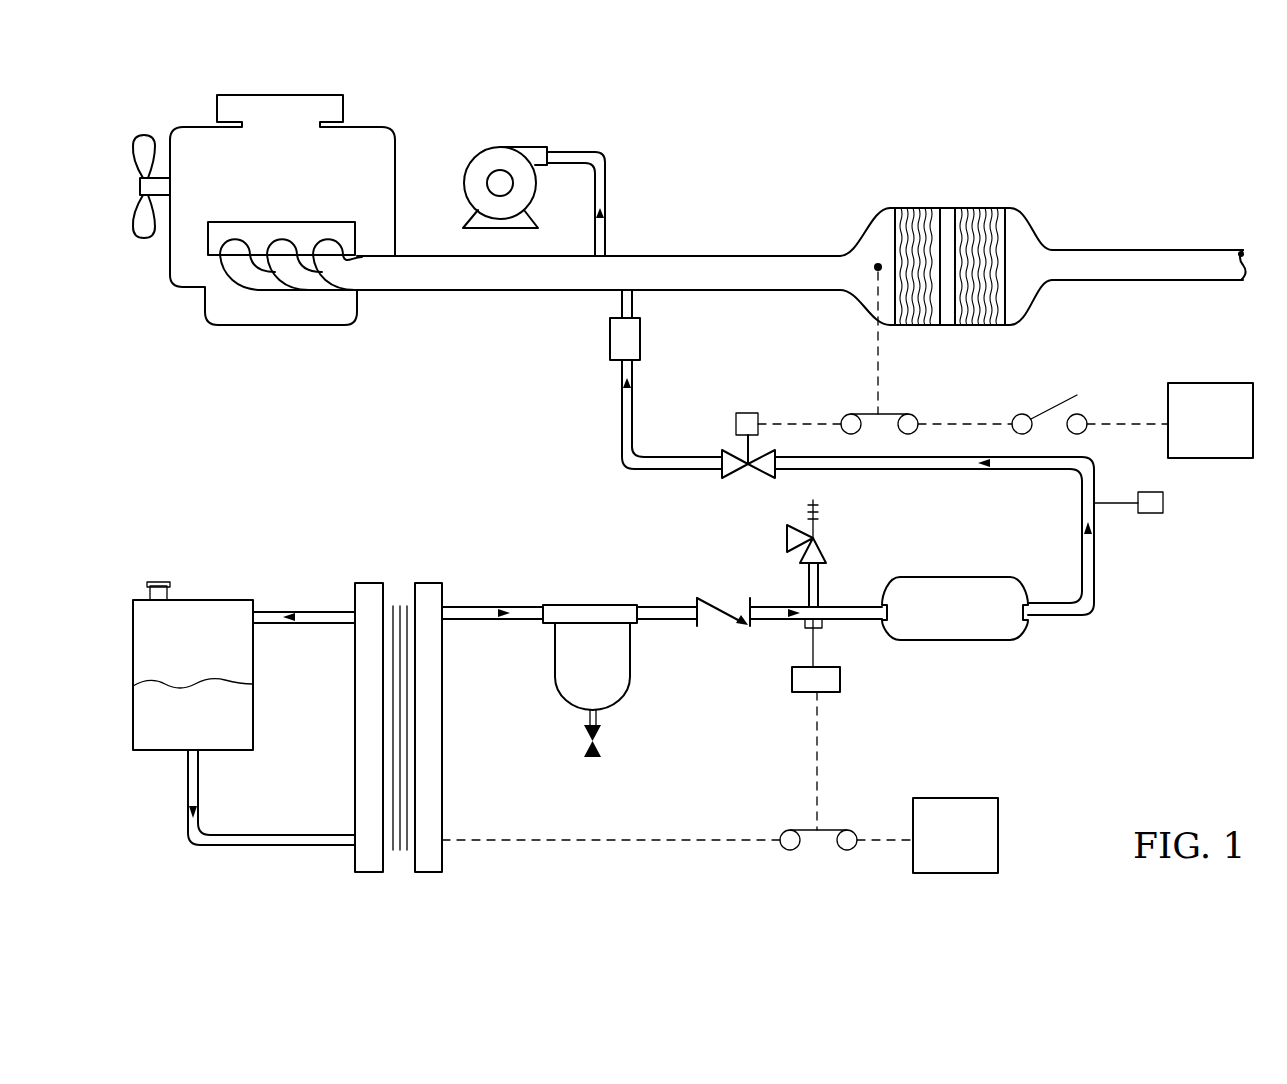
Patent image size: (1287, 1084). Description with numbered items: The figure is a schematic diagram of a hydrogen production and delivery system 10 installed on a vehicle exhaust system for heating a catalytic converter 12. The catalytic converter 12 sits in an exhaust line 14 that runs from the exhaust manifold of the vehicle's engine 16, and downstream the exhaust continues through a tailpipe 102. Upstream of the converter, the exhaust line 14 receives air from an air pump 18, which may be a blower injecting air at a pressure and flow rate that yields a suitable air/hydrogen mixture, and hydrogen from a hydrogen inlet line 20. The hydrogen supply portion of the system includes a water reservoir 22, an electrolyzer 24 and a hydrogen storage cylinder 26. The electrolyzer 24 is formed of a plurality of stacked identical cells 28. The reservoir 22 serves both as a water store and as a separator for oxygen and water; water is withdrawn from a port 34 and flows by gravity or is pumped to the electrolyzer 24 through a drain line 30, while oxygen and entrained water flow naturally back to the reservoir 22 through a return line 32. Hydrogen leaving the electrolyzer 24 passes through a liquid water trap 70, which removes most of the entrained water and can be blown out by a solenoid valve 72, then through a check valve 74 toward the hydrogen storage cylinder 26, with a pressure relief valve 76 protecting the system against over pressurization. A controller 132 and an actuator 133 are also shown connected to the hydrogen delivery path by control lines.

The system 10 is at (1176, 152).
The catalytic converter 12 is at (1035, 305).
The exhaust line 14 is at (750, 288).
The engine 16 is at (312, 325).
The air pump 18 is at (466, 178).
The hydrogen inlet line 20 is at (620, 298).
The water reservoir 22 is at (253, 648).
The electrolyzer 24 is at (355, 762).
The hydrogen storage cylinder 26 is at (940, 577).
The stacked identical cells 28 is at (400, 872).
The drain line 30 is at (188, 778).
The return line 32 is at (275, 612).
The port 34 is at (168, 586).
The liquid water trap 70 is at (555, 660).
The solenoid valve 72 is at (585, 742).
The check valve 74 is at (697, 598).
The pressure relief valve 76 is at (817, 538).
The tailpipe 102 is at (1140, 250).
The controller 132 is at (1000, 822).
The actuator 133 is at (792, 673).